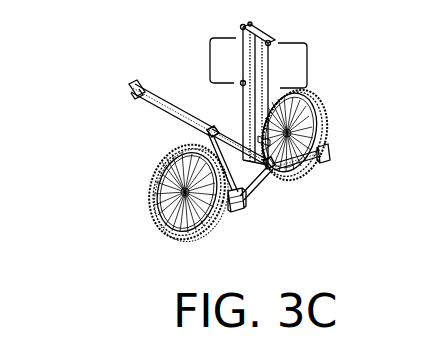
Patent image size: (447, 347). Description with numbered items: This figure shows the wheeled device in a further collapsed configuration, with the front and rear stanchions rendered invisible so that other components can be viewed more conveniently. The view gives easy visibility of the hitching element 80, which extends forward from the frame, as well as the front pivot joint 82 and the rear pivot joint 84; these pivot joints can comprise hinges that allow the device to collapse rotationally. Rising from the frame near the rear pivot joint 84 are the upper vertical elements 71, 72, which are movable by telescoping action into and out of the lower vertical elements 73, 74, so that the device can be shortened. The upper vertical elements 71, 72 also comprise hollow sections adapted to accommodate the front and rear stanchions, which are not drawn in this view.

The upper vertical element 71 is at (210, 52).
The upper vertical element 72 is at (307, 65).
The lower vertical element 73 is at (244, 110).
The lower vertical element 74 is at (262, 141).
The hitching element 80 is at (122, 98).
The front pivot joint 82 is at (210, 128).
The rear pivot joint 84 is at (269, 166).